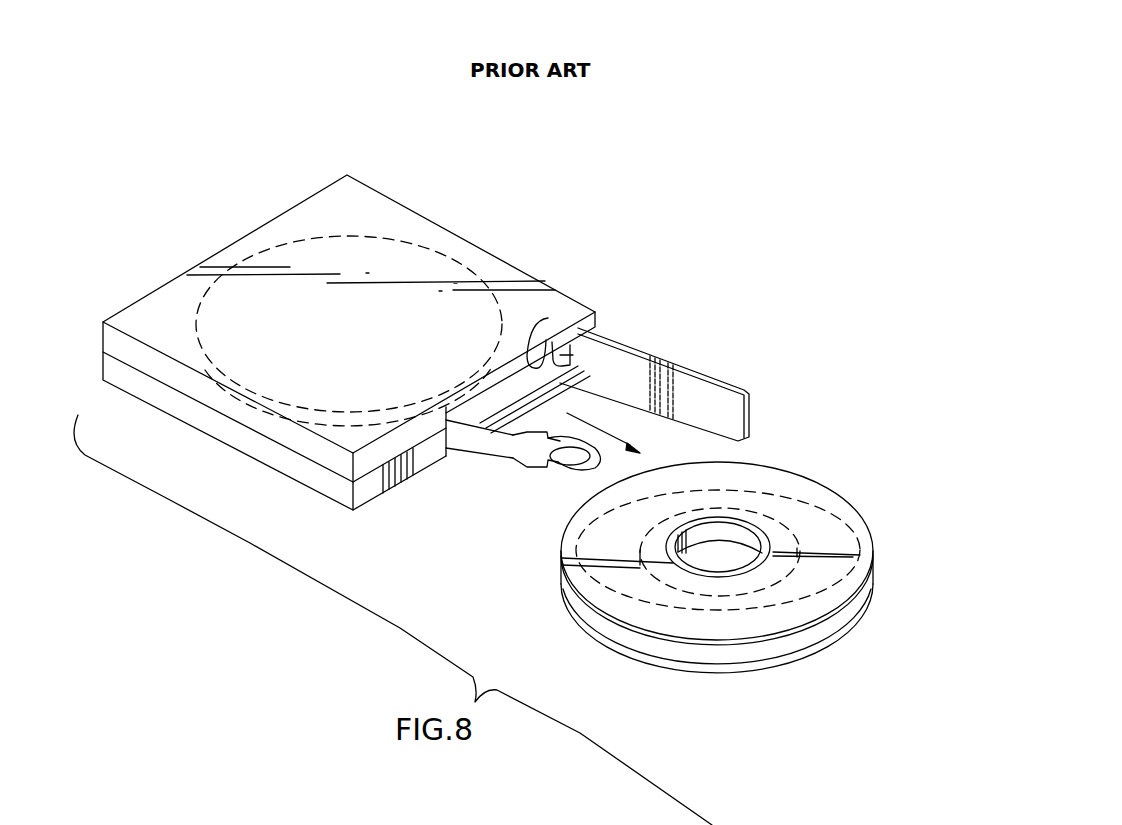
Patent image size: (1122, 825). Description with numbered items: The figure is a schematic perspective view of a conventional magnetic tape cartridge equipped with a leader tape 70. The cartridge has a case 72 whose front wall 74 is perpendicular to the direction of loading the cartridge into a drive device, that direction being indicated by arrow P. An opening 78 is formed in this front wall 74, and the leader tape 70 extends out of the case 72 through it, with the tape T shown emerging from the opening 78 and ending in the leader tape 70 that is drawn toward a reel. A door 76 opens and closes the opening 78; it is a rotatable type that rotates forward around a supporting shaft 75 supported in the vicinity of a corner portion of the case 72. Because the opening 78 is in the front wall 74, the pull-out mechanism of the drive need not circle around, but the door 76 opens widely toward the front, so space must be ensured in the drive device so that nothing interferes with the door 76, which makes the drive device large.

The leader tape 70 is at (537, 462).
The case 72 is at (468, 245).
The front wall 74 is at (383, 490).
The supporting shaft 75 is at (578, 348).
The door 76 is at (713, 380).
The opening 78 is at (543, 360).
The tape T is at (493, 448).
The direction of loading P is at (597, 427).